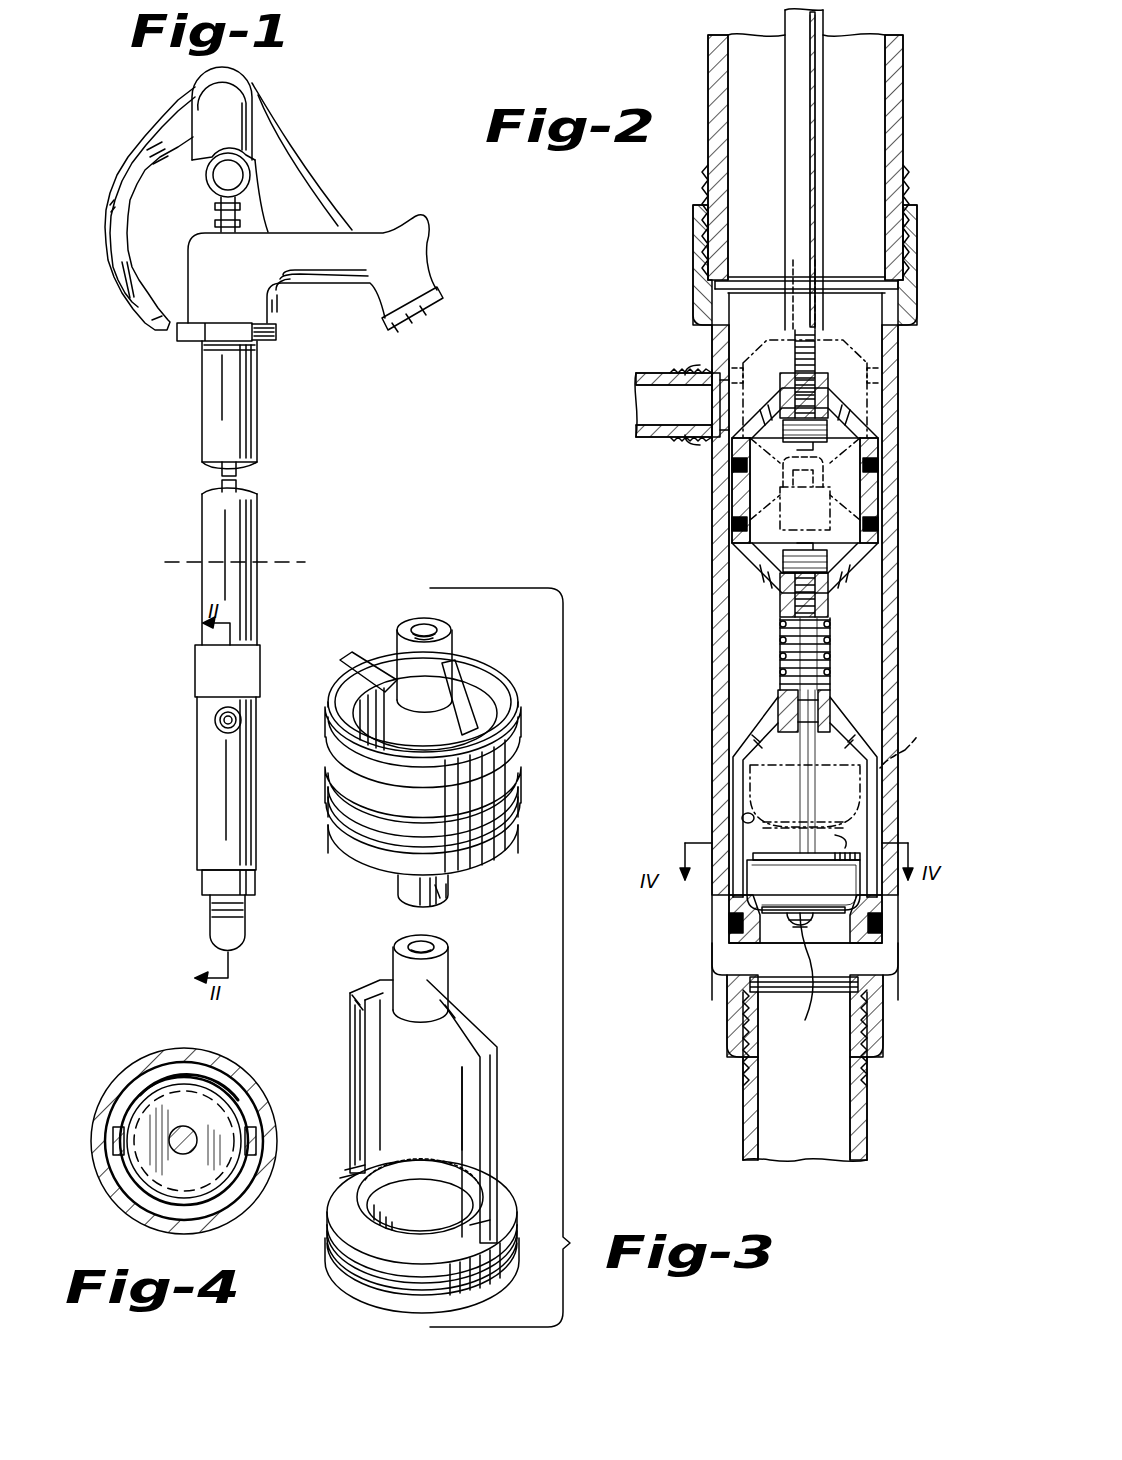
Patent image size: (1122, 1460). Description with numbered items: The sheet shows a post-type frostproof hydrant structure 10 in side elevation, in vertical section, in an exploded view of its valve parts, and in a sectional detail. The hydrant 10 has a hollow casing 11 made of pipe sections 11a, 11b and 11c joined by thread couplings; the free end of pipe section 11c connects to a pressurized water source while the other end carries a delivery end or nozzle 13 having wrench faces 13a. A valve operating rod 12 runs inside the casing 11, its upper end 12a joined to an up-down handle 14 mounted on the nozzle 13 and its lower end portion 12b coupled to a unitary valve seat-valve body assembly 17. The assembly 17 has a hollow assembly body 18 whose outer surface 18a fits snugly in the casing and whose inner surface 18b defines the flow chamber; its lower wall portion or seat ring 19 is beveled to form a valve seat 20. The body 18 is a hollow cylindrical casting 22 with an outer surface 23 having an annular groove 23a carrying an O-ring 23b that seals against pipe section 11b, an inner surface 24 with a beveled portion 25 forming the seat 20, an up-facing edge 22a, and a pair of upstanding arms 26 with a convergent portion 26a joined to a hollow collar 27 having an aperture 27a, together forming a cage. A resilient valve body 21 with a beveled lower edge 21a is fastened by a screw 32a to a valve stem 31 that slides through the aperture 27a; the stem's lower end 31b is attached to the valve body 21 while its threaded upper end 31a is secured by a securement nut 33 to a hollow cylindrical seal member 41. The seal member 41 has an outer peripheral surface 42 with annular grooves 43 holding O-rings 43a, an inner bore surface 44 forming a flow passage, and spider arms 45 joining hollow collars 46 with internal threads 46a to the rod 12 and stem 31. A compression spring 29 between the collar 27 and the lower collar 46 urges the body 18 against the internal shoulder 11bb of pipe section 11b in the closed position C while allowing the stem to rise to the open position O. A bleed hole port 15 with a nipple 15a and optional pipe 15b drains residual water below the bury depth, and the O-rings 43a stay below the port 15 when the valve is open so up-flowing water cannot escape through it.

In FIG. 1, the post-type frostproof hydrant structure 10 is at (268, 446).
In FIG. 1, the hollow casing 11 is at (258, 598).
In FIG. 1, the pipe section 11a is at (200, 510).
In FIG. 2, the pipe section 11a is at (708, 150).
In FIG. 1, the pipe section 11b is at (202, 822).
In FIG. 2, the pipe section 11b is at (893, 652).
In FIG. 4, the pipe section 11b is at (120, 1080).
In FIG. 2, the internal shoulder 11bb is at (880, 950).
In FIG. 1, the pipe section 11c is at (210, 930).
In FIG. 2, the pipe section 11c is at (740, 1120).
In FIG. 1, the valve operating rod 12 is at (240, 478).
In FIG. 2, the valve operating rod 12 is at (788, 112).
In FIG. 1, the upper end of rod 12a is at (215, 218).
In FIG. 2, the lower end portion of rod 12b is at (823, 250).
In FIG. 1, the delivery end (nozzle) 13 is at (437, 296).
In FIG. 1, the wrench faces 13a is at (274, 330).
In FIG. 1, the hydrant operating means (handle) 14 is at (106, 233).
In FIG. 1, the bleed hole port 15 is at (218, 726).
In FIG. 2, the bleed hole port 15 is at (712, 400).
In FIG. 2, the nipple 15a is at (700, 360).
In FIG. 2, the section of pipe 15b is at (650, 445).
In FIG. 2, the unitary valve seat-valve body assembly 17 is at (870, 720).
In FIG. 3, the hollow assembly body 18 is at (352, 993).
In FIG. 2, the hollow assembly body 18 is at (872, 760).
In FIG. 2, the outer surface of assembly body 18a is at (729, 905).
In FIG. 2, the inner surface of assembly body 18b is at (742, 820).
In FIG. 3, the lower wall portion (seat ring) 19 is at (333, 1275).
In FIG. 2, the lower wall portion (seat ring) 19 is at (875, 985).
In FIG. 3, the valve seat 20 is at (360, 1200).
In FIG. 2, the valve seat 20 is at (805, 919).
In FIG. 2, the valve body 21 is at (793, 893).
In FIG. 2, the lower edge of valve member 21a is at (875, 907).
In FIG. 3, the hollow cylindrical casting 22 is at (410, 1148).
In FIG. 4, the hollow cylindrical casting 22 is at (222, 1082).
In FIG. 3, the up-facing edge 22a is at (500, 1185).
In FIG. 4, the up-facing edge 22a is at (205, 1060).
In FIG. 3, the outer surface of casting 23 is at (512, 1235).
In FIG. 2, the annular groove 23a is at (880, 925).
In FIG. 3, the O-ring 23b is at (372, 1290).
In FIG. 2, the O-ring 23b is at (735, 925).
In FIG. 3, the inner surface of casting 24 is at (445, 1213).
In FIG. 3, the beveled portion 25 is at (357, 1185).
In FIG. 2, the beveled portion 25 is at (740, 950).
In FIG. 4, the beveled portion 25 is at (165, 1078).
In FIG. 3, the upstanding arms 26 is at (463, 1102).
In FIG. 2, the upstanding arms 26 is at (745, 775).
In FIG. 4, the upstanding arms 26 is at (258, 1132).
In FIG. 3, the convergent portion of arms 26a is at (368, 985).
In FIG. 2, the convergent portion of arms 26a is at (755, 740).
In FIG. 3, the hollow collar 27 is at (450, 958).
In FIG. 2, the hollow collar 27 is at (832, 700).
In FIG. 3, the aperture 27a is at (430, 948).
In FIG. 2, the aperture 27a is at (785, 725).
In FIG. 2, the compression spring 29 is at (780, 655).
In FIG. 2, the valve stem 31 is at (815, 800).
In FIG. 4, the valve stem 31 is at (190, 1115).
In FIG. 2, the upper end of stem 31a is at (830, 655).
In FIG. 2, the stem lower end 31b is at (803, 979).
In FIG. 2, the screw 32a is at (795, 853).
In FIG. 4, the screw 32a is at (152, 1175).
In FIG. 2, the securement nut 33 is at (785, 565).
In FIG. 3, the hollow cylindrical seal member 41 is at (532, 742).
In FIG. 2, the hollow cylindrical seal member 41 is at (890, 495).
In FIG. 2, the outer peripheral surface 42 is at (880, 508).
In FIG. 3, the annular grooves 43 is at (330, 800).
In FIG. 2, the annular grooves 43 is at (735, 472).
In FIG. 2, the O-rings 43a is at (732, 525).
In FIG. 3, the inner annular bore surface 44 is at (358, 685).
In FIG. 3, the spider arms 45 is at (375, 690).
In FIG. 2, the spider arms 45 is at (830, 432).
In FIG. 3, the hollow collars 46 is at (460, 660).
In FIG. 2, the hollow collars 46 is at (825, 385).
In FIG. 3, the internal threads 46a is at (433, 628).
In FIG. 2, the internal threads 46a is at (795, 380).
In FIG. 2, the closed position C is at (839, 841).
In FIG. 2, the open position O is at (905, 742).